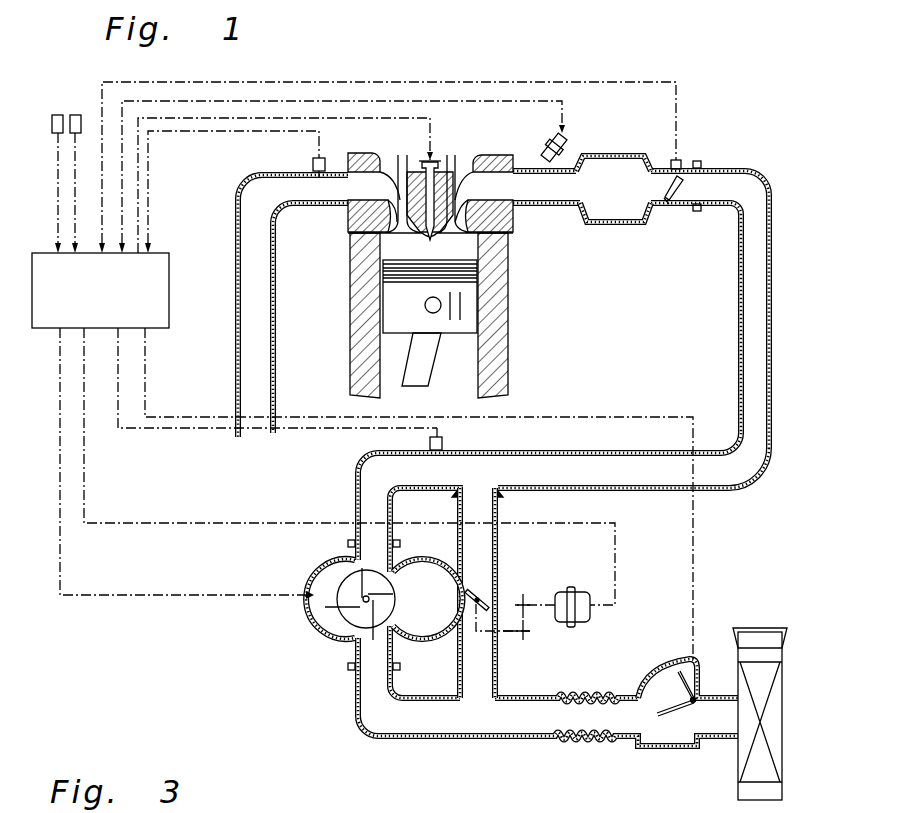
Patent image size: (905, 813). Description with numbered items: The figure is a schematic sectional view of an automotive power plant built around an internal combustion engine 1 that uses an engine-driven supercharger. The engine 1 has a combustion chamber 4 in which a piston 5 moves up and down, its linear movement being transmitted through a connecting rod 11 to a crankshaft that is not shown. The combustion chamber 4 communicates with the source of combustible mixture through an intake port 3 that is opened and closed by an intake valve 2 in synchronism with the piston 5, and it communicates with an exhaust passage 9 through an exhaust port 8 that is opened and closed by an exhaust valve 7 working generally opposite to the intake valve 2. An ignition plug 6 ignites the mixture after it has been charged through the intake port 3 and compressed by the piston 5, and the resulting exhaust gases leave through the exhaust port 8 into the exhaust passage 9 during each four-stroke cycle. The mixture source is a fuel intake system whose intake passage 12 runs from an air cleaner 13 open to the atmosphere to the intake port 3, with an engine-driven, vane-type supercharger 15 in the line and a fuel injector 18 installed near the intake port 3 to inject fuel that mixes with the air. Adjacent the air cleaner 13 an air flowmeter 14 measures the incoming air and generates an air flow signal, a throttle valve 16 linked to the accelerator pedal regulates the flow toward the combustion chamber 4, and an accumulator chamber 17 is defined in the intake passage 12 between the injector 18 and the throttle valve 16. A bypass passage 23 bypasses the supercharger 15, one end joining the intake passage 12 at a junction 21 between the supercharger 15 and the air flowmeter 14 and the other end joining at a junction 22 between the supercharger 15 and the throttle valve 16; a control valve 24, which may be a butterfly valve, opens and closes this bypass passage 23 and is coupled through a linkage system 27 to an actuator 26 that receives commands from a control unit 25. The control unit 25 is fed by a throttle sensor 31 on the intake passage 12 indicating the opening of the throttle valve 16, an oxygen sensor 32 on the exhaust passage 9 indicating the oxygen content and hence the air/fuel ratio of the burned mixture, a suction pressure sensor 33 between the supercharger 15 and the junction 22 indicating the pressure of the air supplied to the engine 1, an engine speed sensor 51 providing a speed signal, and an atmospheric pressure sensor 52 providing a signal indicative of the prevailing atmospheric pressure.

The internal combustion engine 1 is at (452, 253).
The intake valve 2 is at (510, 252).
The intake port 3 is at (514, 224).
The combustion chamber 4 is at (438, 247).
The piston 5 is at (457, 303).
The ignition plug 6 is at (434, 185).
The exhaust valve 7 is at (377, 253).
The exhaust port 8 is at (372, 214).
The exhaust passage 9 is at (292, 212).
The connecting rod 11 is at (427, 352).
The intake passage 12 is at (742, 312).
The air cleaner 13 is at (757, 770).
The air flowmeter 14 is at (700, 685).
The supercharger 15 is at (348, 626).
The throttle valve 16 is at (672, 198).
The accumulator chamber 17 is at (617, 156).
The fuel injector 18 is at (563, 160).
The junction 21 is at (473, 707).
The junction 22 is at (468, 470).
The bypass passage 23 is at (502, 541).
The control valve 24 is at (485, 590).
The control unit 25 is at (163, 283).
The actuator 26 is at (583, 592).
The linkage system 27 is at (530, 622).
The throttle sensor 31 is at (681, 160).
The oxygen sensor 32 is at (312, 163).
The suction pressure sensor 33 is at (452, 445).
The engine speed sensor 51 is at (55, 115).
The atmospheric pressure sensor 52 is at (75, 115).